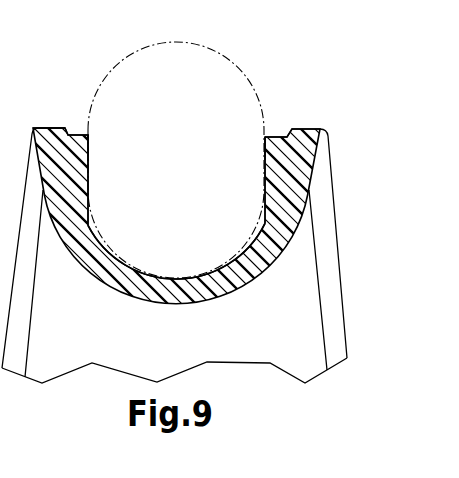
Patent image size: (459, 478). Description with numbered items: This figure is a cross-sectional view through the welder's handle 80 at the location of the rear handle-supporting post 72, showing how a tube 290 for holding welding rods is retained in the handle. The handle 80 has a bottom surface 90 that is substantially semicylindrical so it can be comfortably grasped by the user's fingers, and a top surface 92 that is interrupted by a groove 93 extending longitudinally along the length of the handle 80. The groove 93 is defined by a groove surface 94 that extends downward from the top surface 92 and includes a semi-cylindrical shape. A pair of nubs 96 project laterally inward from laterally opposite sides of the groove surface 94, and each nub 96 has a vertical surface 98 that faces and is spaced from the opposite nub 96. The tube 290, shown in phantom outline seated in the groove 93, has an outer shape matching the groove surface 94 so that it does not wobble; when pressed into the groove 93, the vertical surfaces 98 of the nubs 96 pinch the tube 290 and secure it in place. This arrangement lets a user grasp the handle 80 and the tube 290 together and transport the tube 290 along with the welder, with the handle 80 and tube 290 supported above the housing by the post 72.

The rear handle-supporting post 72 is at (188, 348).
The handle 80 is at (50, 127).
The top surface 92 is at (298, 128).
The bottom surface 90 is at (221, 300).
The groove surface 94 is at (232, 267).
The nub 96 is at (90, 163).
The vertical surface 98 is at (90, 193).
The groove 93 is at (172, 104).
The tube 290 is at (226, 42).